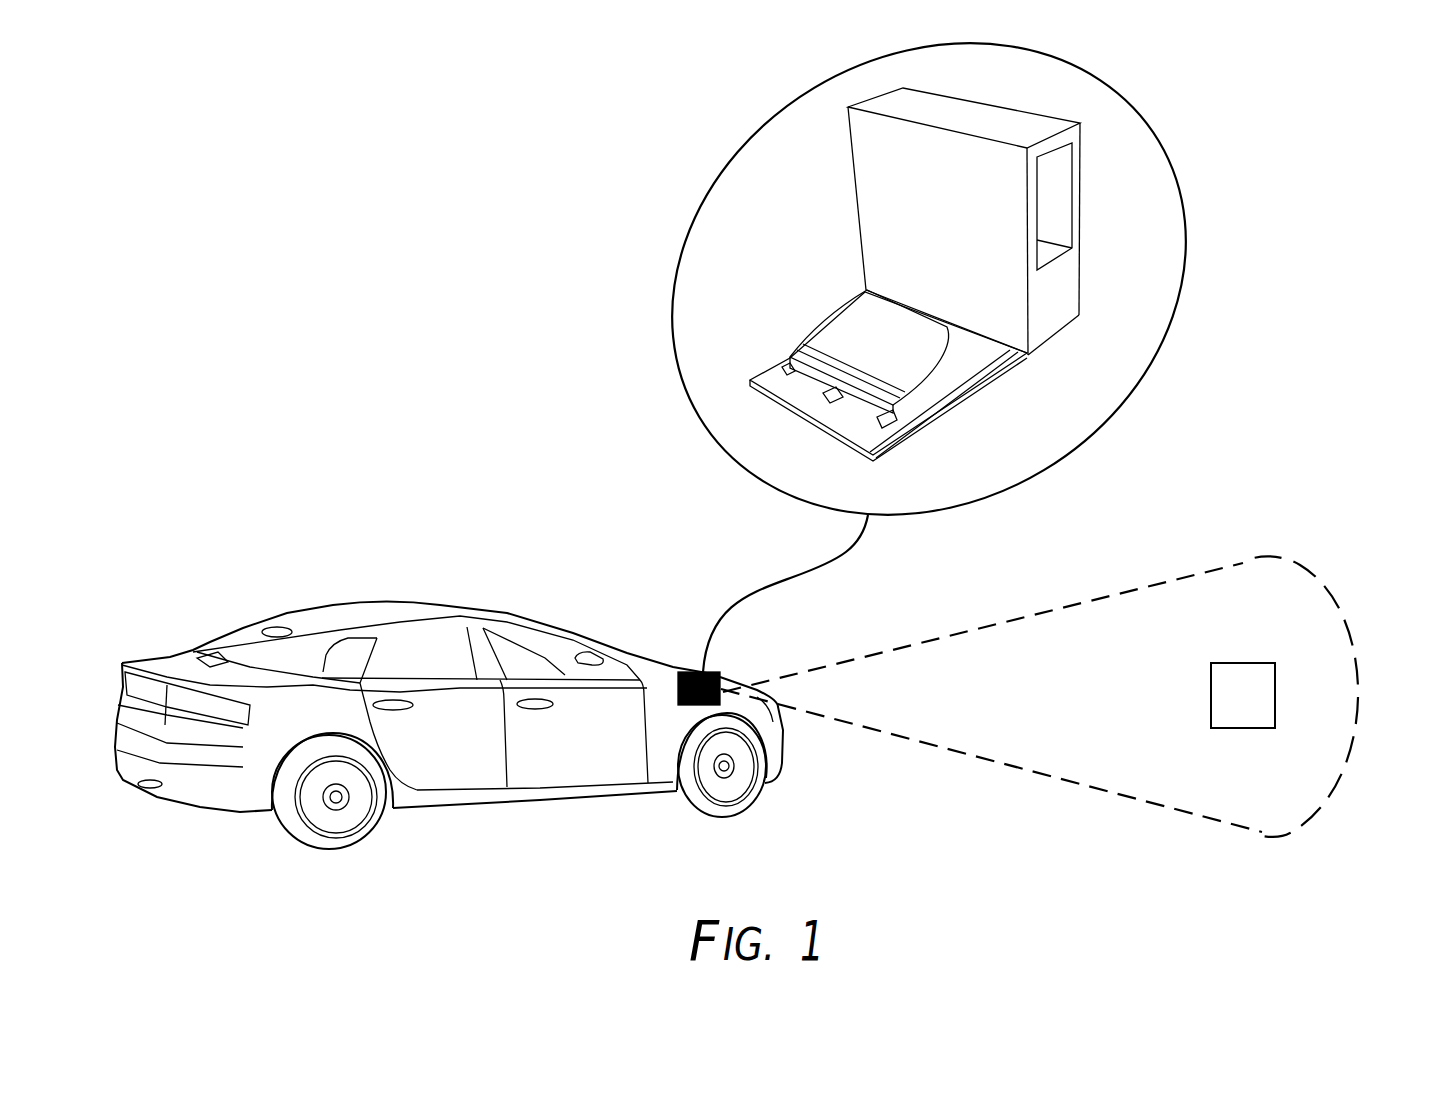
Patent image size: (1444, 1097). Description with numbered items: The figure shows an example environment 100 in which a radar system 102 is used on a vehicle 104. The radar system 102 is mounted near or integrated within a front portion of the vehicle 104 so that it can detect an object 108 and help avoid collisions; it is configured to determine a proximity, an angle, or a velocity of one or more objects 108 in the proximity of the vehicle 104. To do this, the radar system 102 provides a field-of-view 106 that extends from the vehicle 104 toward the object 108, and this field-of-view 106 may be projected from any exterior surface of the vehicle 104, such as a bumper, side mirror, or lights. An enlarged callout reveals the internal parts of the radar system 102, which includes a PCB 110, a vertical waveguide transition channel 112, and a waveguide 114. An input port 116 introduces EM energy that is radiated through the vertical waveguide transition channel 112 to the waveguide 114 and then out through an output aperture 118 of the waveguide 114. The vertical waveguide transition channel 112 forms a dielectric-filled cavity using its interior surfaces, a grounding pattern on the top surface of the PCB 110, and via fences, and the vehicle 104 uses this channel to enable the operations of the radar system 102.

The environment 100 is at (331, 135).
The radar system 102 is at (678, 672).
The vehicle 104 is at (375, 603).
The field-of-view 106 is at (1243, 560).
The object 108 is at (1211, 692).
The PCB 110 is at (844, 427).
The vertical waveguide transition channel 112 is at (846, 336).
The waveguide 114 is at (1051, 297).
The input port 116 is at (825, 402).
The output aperture 118 is at (1053, 200).